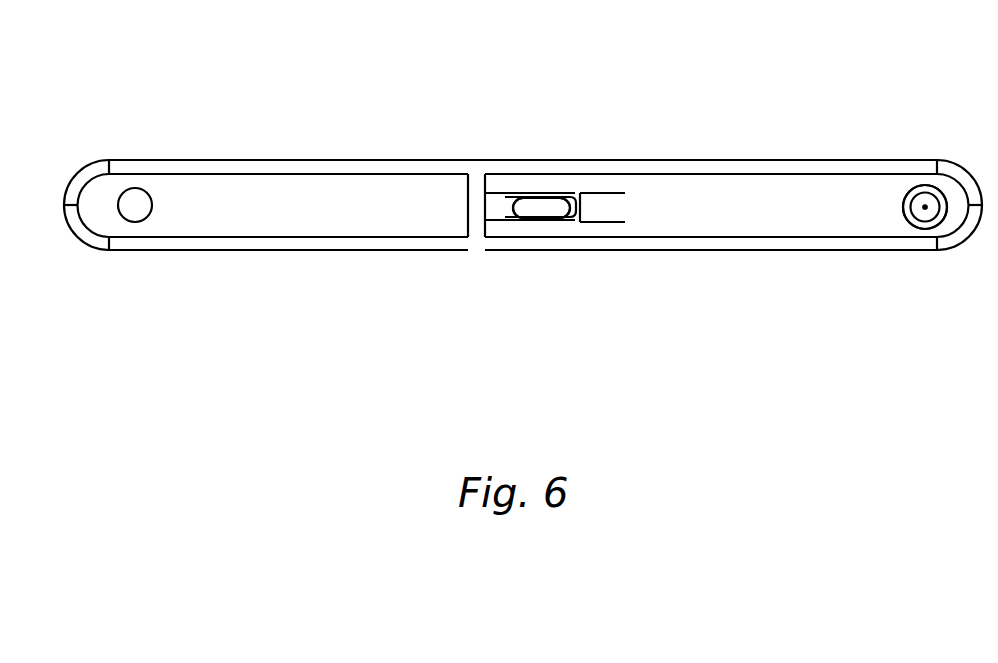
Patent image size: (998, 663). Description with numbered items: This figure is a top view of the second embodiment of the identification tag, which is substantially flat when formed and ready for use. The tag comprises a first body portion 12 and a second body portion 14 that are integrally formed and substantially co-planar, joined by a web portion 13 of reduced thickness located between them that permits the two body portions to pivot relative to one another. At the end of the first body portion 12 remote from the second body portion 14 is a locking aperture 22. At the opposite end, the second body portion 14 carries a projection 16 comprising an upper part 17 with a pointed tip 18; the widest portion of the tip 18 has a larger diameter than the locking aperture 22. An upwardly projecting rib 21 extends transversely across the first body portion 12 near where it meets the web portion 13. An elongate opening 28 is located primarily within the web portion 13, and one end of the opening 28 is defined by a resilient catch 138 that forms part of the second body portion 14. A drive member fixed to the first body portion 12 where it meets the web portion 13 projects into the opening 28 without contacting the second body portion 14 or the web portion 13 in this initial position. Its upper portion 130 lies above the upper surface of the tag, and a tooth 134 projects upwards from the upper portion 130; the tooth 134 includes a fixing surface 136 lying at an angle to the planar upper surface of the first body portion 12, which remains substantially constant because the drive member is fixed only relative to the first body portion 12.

The first body portion 12 is at (297, 198).
The web portion 13 is at (530, 167).
The second body portion 14 is at (765, 190).
The projection 16 is at (902, 221).
The upper part 17 is at (913, 187).
The pointed tip 18 is at (928, 212).
The rib 21 is at (475, 203).
The locking aperture 22 is at (131, 190).
The opening 28 is at (580, 193).
The upper portion 130 is at (498, 203).
The tooth 134 is at (570, 215).
The fixing surface 136 is at (532, 210).
The resilient catch 138 is at (598, 210).